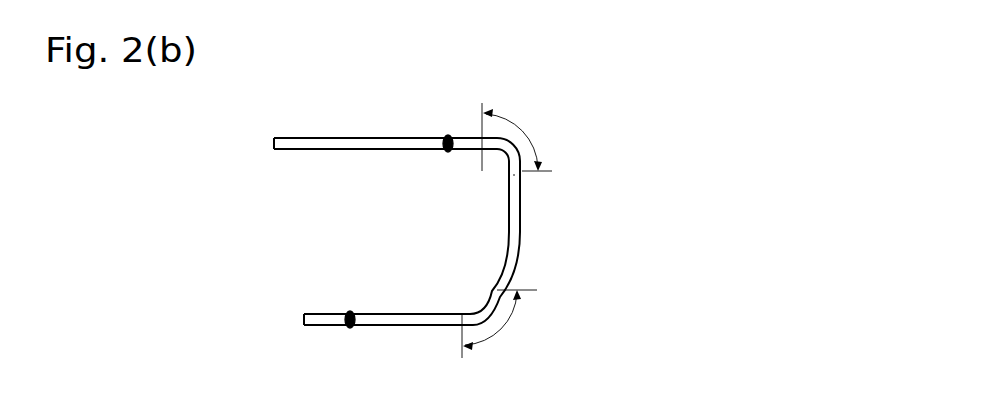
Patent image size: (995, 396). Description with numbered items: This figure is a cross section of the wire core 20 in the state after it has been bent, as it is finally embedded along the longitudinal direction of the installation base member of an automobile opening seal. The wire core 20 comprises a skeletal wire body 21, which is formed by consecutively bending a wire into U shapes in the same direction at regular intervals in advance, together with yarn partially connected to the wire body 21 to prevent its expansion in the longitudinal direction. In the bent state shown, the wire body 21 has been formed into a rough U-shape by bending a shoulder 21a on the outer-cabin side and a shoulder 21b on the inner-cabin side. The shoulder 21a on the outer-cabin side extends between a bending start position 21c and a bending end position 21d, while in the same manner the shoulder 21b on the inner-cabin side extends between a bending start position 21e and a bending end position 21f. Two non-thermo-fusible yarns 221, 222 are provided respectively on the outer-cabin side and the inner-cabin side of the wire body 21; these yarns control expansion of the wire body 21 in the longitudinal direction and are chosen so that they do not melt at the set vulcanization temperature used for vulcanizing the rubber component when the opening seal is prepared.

The wire core 20 is at (560, 98).
The wire body 21 is at (324, 138).
The shoulder on the outer-cabin side 21a is at (528, 130).
The shoulder on the inner-cabin side 21b is at (490, 345).
The bending start position 21c is at (514, 174).
The bending end position 21d is at (478, 140).
The bending start position 21e is at (497, 290).
The bending end position 21f is at (458, 318).
The non-thermo-fusible yarn 221 is at (448, 152).
The non-thermo-fusible yarn 222 is at (350, 328).